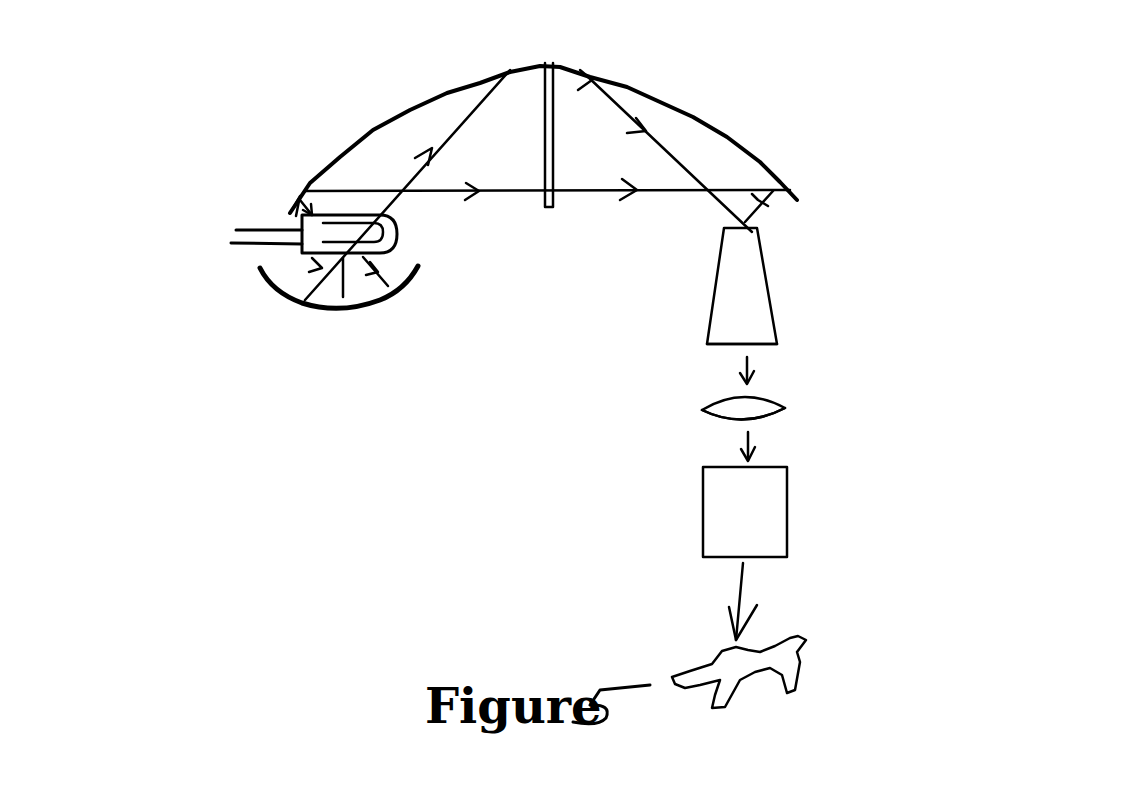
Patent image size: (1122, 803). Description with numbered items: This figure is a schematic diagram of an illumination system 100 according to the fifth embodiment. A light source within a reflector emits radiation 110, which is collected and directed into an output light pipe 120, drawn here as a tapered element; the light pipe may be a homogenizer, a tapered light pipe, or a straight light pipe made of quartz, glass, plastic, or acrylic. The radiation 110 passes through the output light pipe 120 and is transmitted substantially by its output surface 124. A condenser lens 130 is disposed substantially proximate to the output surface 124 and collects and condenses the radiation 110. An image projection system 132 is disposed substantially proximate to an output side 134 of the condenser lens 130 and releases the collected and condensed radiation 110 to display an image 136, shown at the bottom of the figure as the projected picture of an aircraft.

The illumination system 100 is at (1107, 443).
The radiation 110 is at (765, 446).
The output light pipe 120 is at (781, 286).
The output surface 124 is at (667, 385).
The condenser lens 130 is at (794, 414).
The image projection system 132 is at (900, 522).
The output side 134 is at (677, 457).
The image 136 is at (796, 672).